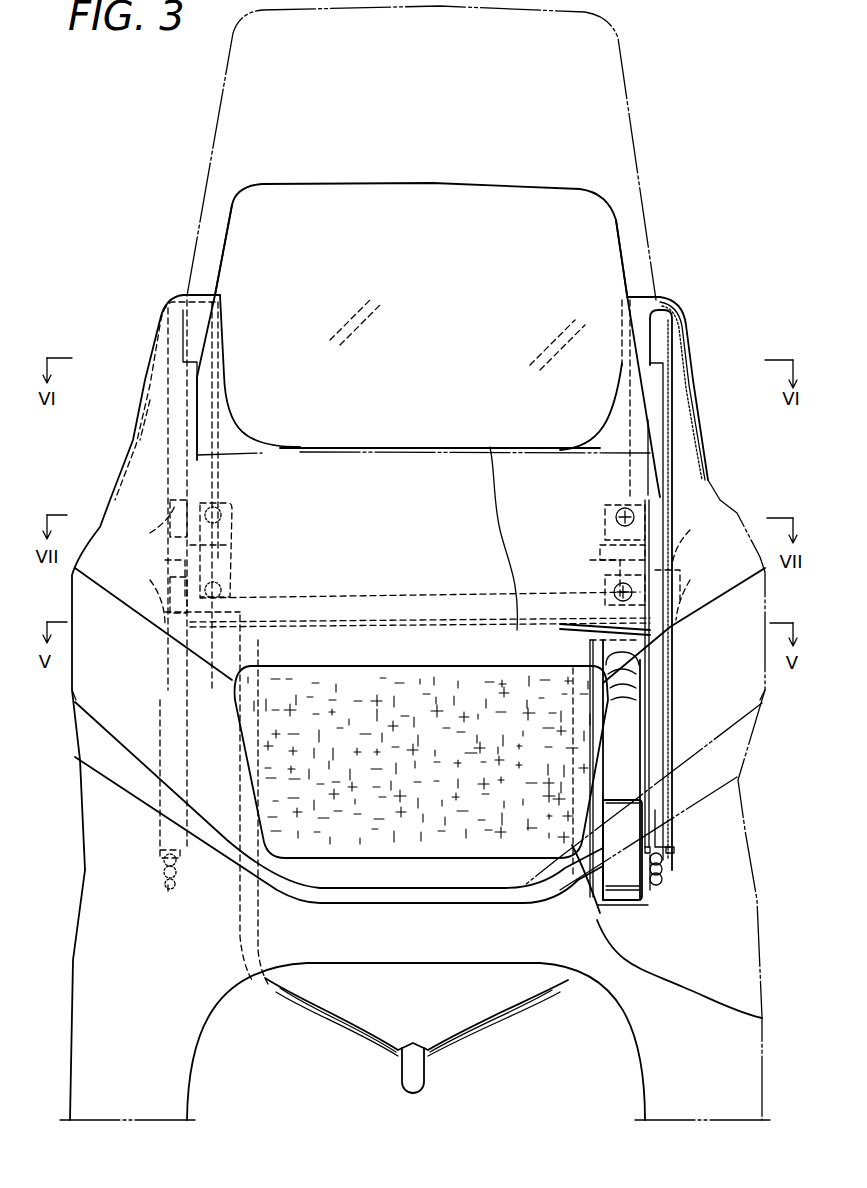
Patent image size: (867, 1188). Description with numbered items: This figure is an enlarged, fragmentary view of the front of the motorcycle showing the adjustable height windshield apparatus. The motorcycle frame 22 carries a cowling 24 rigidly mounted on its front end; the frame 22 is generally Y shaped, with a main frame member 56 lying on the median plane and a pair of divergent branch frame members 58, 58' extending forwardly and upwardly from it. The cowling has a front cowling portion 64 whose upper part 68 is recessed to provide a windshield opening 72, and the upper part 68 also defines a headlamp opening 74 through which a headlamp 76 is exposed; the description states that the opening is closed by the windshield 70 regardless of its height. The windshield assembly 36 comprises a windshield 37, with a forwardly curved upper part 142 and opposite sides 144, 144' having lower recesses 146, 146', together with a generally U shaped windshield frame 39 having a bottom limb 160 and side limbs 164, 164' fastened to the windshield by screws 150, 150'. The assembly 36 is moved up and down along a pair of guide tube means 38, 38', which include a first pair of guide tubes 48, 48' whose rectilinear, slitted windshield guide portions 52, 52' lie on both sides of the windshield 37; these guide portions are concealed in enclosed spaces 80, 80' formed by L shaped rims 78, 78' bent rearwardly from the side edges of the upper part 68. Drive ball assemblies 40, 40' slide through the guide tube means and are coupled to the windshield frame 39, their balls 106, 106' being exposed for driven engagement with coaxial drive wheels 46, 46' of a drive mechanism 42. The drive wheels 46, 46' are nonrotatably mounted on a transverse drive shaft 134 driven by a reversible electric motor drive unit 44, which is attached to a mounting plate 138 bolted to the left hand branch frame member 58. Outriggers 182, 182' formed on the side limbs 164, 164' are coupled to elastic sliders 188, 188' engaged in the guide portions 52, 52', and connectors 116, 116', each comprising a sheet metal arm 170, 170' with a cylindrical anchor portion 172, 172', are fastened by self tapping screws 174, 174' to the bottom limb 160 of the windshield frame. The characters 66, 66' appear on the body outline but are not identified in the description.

The frame 22 is at (530, 1030).
The cowling 24 is at (84, 872).
The windshield assembly 36 is at (624, 229).
The windshield 37 is at (633, 126).
The guide tube means 38 is at (643, 695).
The guide tube means 38' is at (132, 775).
The windshield frame 39 is at (445, 596).
The drive ball assembly 40 is at (694, 879).
The drive ball assembly 40' is at (145, 917).
The drive mechanism 42 is at (643, 900).
The reversible electric motor drive unit 44 is at (607, 782).
The drive wheel 46 is at (683, 806).
The drive wheel 46' is at (159, 575).
The first guide tube 48 is at (696, 708).
The first guide tube 48' is at (146, 582).
The windshield guide portion 52 is at (697, 451).
The windshield guide portion 52' is at (128, 499).
The main frame member 56 is at (405, 1075).
The branch frame member 58 is at (491, 1043).
The branch frame member 58' is at (338, 1040).
The front cowling portion 64 is at (445, 466).
The body contour 66 is at (790, 706).
The body contour 66' is at (57, 721).
The upper part of the front cowling portion 68 is at (407, 488).
The windshield 70 is at (187, 1088).
The windshield opening 72 is at (320, 445).
The headlamp opening 74 is at (470, 875).
The headlamp 76 is at (348, 880).
The rim 78 is at (664, 404).
The rim 78' is at (169, 496).
The enclosed space 80 is at (701, 391).
The enclosed space 80' is at (119, 420).
The balls 106 is at (690, 863).
The balls 106' is at (141, 869).
The left hand connector 116 is at (697, 578).
The link 116' is at (148, 580).
The drive shaft 134 is at (205, 830).
The mounting plate 138 is at (650, 665).
The upper part of the windshield 142 is at (546, 195).
The windshield side 144 is at (672, 372).
The windshield side 144' is at (199, 332).
The recess 146 is at (572, 568).
The recess 146' is at (241, 543).
The screw 150 is at (590, 547).
The screw 150' is at (253, 545).
The bottom limb 160 is at (392, 595).
The side limb 164 is at (593, 538).
The side limb 164' is at (251, 550).
The connector arm 170 is at (589, 616).
The guide 170' is at (229, 799).
The anchor portion 172 is at (684, 625).
The diagonal strut 172' is at (153, 624).
The self tapping screw 174 is at (586, 646).
The lower rail 174' is at (235, 610).
The outrigger 182 is at (595, 536).
The hinge bracket 182' is at (235, 540).
The slider 188 is at (701, 574).
The lever 188' is at (141, 565).